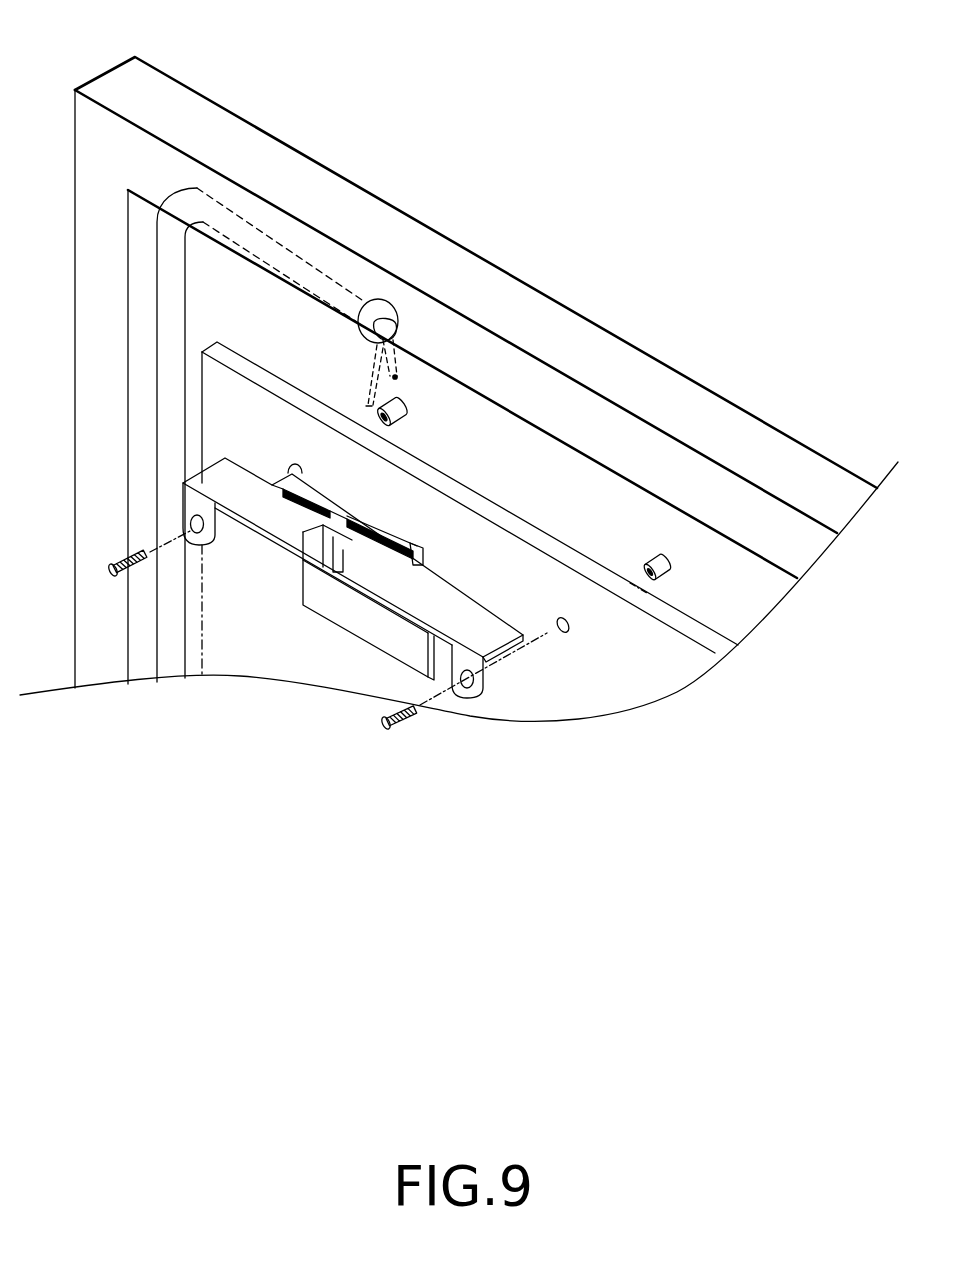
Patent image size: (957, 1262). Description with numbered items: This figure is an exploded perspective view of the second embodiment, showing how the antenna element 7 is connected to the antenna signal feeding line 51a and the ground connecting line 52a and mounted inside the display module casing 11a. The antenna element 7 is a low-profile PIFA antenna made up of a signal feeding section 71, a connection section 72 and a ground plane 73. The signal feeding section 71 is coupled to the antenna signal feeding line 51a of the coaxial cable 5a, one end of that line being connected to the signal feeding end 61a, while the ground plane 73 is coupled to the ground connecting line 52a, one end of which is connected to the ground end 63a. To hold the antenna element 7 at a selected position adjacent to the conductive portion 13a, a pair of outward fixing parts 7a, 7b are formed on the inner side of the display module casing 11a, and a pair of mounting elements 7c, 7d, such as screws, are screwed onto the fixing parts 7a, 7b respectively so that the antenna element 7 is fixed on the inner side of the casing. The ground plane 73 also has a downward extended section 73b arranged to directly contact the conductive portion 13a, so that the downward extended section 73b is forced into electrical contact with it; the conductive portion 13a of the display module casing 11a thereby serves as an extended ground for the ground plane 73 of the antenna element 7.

The display module casing 11a is at (163, 95).
The conductive portion 13a is at (657, 680).
The wire channel 5a is at (303, 258).
The antenna signal feeding line 51a is at (392, 350).
The ground connecting line 52a is at (355, 298).
The signal feeding end 61a is at (378, 373).
The ground end 63a is at (368, 407).
The antenna element 7 is at (359, 583).
The fixing part 7a is at (672, 563).
The fixing part 7b is at (408, 408).
The mounting element 7c is at (385, 733).
The mounting element 7d is at (115, 577).
The signal feeding section 71 is at (375, 525).
The connection section 72 is at (335, 558).
The ground plane 73 is at (452, 605).
The downward extended section 73b is at (393, 643).